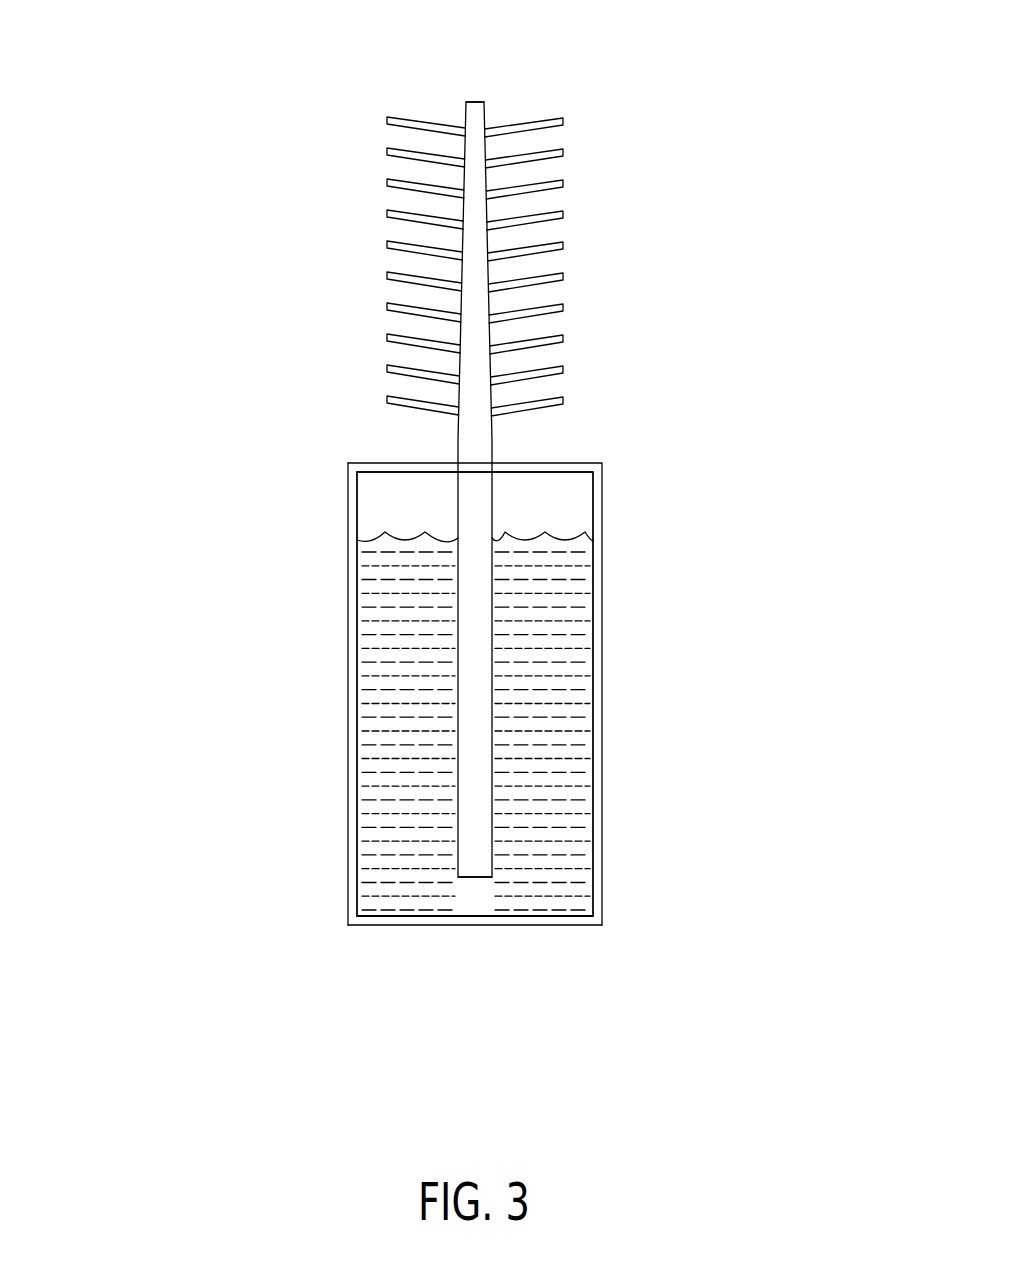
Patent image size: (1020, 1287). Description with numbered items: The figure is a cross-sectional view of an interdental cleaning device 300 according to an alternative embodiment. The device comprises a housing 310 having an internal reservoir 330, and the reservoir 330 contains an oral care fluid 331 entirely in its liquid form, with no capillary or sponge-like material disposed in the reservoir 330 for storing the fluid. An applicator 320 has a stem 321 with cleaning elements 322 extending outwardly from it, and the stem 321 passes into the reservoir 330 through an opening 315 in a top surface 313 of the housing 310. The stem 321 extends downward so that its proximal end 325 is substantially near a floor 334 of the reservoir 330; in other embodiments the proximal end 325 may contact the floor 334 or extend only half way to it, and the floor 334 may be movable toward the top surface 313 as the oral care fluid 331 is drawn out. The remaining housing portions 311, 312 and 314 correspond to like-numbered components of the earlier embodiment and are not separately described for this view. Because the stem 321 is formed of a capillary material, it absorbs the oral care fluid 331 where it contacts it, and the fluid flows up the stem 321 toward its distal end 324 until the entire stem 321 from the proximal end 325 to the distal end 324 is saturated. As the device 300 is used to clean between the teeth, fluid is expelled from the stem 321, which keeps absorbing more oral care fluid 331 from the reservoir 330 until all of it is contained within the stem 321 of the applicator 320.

The interdental cleaning device 300 is at (152, 190).
The housing 310 is at (347, 523).
The side wall 311 is at (348, 672).
The inner surface 312 is at (352, 820).
The top surface 313 is at (590, 463).
The bottom wall 314 is at (588, 925).
The opening 315 is at (455, 462).
The applicator 320 is at (342, 187).
The stem 321 is at (495, 267).
The cleaning elements 322 is at (562, 114).
The distal end 324 is at (478, 100).
The proximal end 325 is at (468, 877).
The reservoir 330 is at (402, 578).
The oral care fluid 331 is at (562, 580).
The floor 334 is at (523, 912).